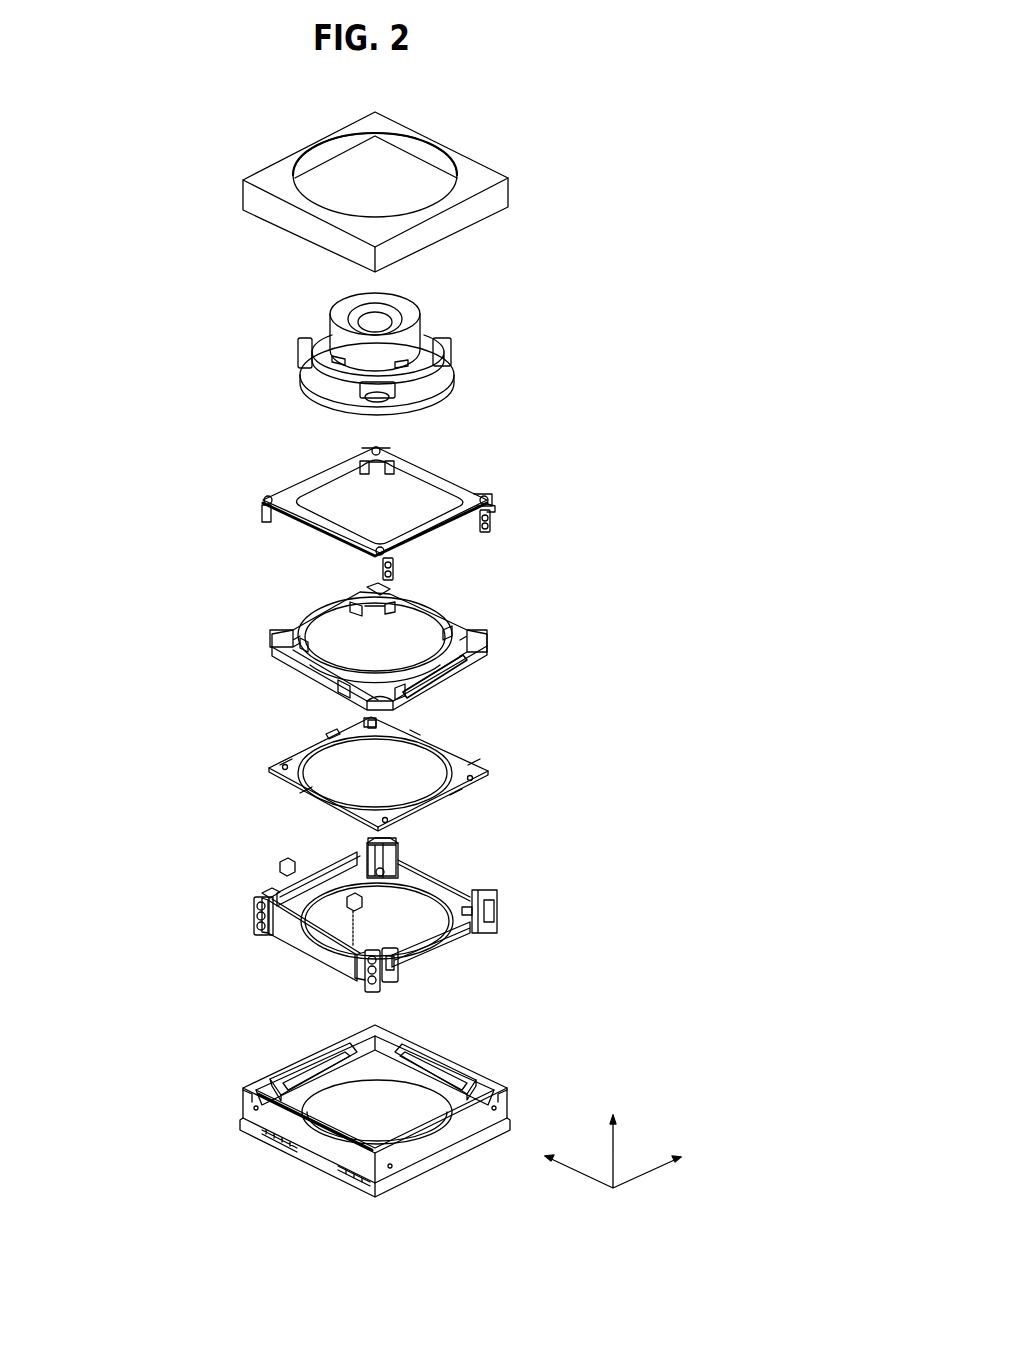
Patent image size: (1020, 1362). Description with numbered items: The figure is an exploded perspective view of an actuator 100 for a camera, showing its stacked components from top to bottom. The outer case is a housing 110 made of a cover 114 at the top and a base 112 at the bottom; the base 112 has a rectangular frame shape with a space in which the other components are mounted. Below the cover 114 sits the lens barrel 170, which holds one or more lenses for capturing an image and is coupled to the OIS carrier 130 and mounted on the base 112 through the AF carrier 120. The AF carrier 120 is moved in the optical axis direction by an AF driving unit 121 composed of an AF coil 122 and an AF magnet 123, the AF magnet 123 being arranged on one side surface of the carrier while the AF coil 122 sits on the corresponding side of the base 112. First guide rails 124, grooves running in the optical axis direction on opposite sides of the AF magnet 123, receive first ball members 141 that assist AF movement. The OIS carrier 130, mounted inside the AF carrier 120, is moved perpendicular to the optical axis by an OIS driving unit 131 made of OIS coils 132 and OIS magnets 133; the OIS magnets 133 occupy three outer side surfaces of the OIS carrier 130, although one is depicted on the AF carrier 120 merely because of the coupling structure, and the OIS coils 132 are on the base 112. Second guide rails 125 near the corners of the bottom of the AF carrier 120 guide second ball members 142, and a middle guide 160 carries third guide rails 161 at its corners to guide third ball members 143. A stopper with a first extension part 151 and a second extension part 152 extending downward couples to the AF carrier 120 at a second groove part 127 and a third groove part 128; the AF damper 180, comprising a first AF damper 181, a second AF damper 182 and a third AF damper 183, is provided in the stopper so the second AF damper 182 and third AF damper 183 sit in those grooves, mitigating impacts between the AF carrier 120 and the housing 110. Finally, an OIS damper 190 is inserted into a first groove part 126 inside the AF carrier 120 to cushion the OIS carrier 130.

The actuator for a camera 100 is at (88, 624).
The housing 110 is at (359, 654).
The base 112 is at (248, 1115).
The cover 114 is at (500, 196).
The AF carrier 120 is at (370, 918).
The AF driving unit 121 is at (265, 1049).
The AF coil 122 is at (343, 1124).
The AF magnet 123 is at (302, 937).
The first guide rail 124 is at (252, 903).
The second guide rail 125 is at (400, 867).
The first groove part 126 is at (303, 893).
The second groove part 127 is at (492, 935).
The third groove part 128 is at (495, 892).
The OIS carrier 130 is at (482, 649).
The OIS driving unit 131 is at (381, 852).
The OIS coil 132 is at (303, 1058).
The OIS magnet 133 is at (452, 609).
The first ball member 141 is at (262, 922).
The second ball member 142 is at (392, 850).
The third ball member 143 is at (365, 722).
The first extension part 151 is at (346, 466).
The second extension part 152 is at (398, 465).
The middle guide 160 is at (351, 778).
The third guide rail 161 is at (370, 718).
The lens barrel 170 is at (413, 320).
The AF damper 180 is at (477, 507).
The first AF damper 181 is at (492, 500).
The second AF damper 182 is at (492, 516).
The third AF damper 183 is at (492, 490).
The OIS damper 190 is at (280, 865).